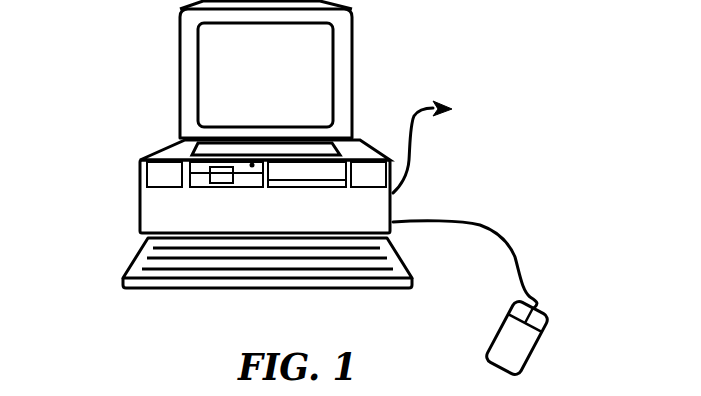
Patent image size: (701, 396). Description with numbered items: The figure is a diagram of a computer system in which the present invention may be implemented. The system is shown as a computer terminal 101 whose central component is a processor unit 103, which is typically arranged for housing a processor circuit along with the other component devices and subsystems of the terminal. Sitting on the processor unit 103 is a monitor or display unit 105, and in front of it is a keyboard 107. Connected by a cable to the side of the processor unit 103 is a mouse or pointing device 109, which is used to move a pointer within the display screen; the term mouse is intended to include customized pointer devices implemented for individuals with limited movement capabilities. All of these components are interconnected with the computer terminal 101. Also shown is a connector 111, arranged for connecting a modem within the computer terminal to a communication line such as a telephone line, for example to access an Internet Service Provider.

The computer terminal 101 is at (533, 193).
The processor unit 103 is at (128, 188).
The monitor or display unit 105 is at (175, 67).
The keyboard 107 is at (120, 265).
The mouse or pointing device 109 is at (553, 328).
The connector 111 is at (457, 110).